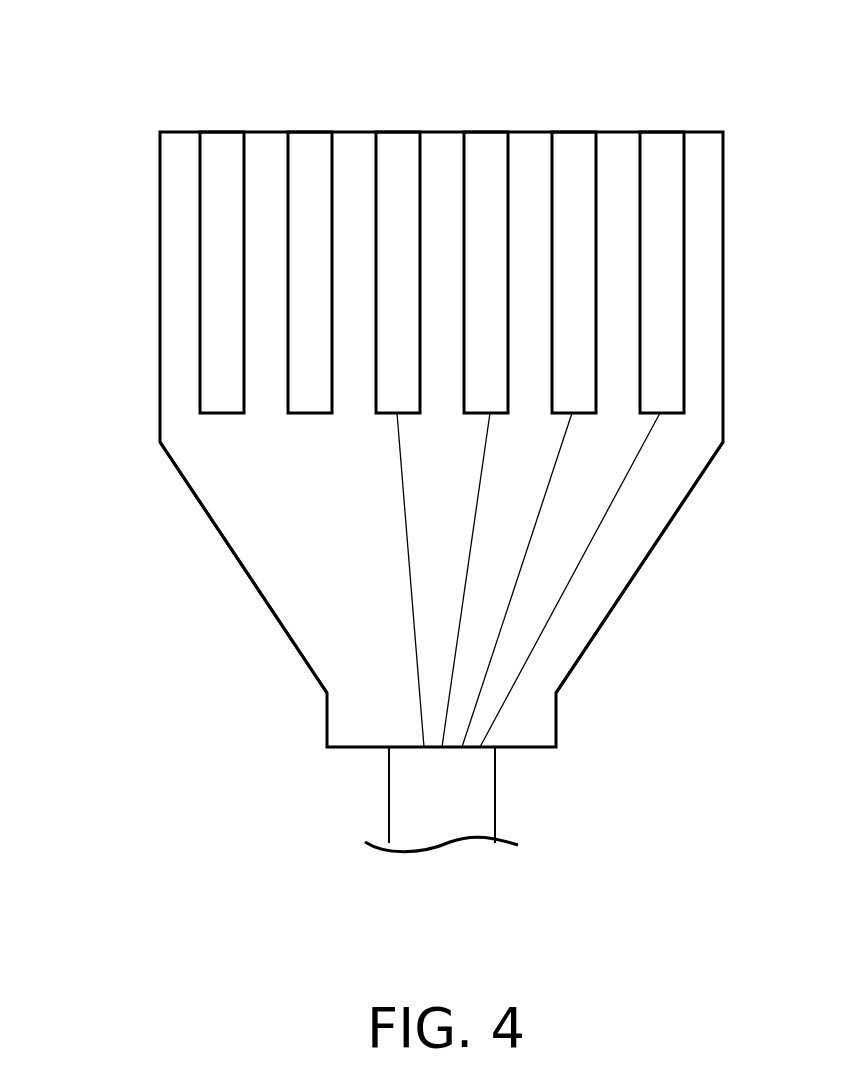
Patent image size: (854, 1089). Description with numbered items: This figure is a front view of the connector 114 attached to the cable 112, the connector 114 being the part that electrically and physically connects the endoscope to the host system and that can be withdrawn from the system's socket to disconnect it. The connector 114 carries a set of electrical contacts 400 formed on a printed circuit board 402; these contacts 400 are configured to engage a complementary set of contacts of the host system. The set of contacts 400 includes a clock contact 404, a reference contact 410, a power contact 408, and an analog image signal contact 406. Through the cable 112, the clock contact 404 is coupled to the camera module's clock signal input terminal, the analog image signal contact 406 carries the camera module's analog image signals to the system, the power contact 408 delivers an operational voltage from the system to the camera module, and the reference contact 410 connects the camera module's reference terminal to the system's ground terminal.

The connector 114 is at (160, 343).
The printed circuit board 402 is at (253, 543).
The set of electrical contacts 400 is at (453, 384).
The clock contact 404 is at (404, 148).
The reference contact 410 is at (488, 148).
The power contact 408 is at (578, 148).
The analog image signal contact 406 is at (584, 409).
The cable 112 is at (407, 795).